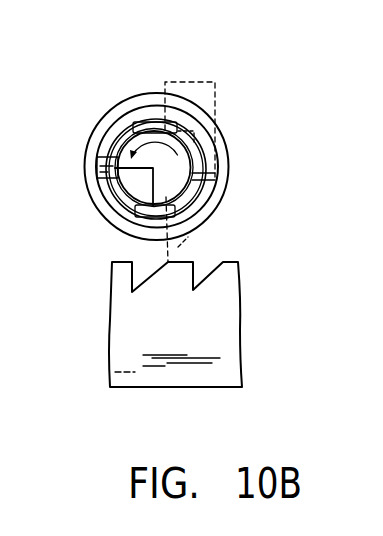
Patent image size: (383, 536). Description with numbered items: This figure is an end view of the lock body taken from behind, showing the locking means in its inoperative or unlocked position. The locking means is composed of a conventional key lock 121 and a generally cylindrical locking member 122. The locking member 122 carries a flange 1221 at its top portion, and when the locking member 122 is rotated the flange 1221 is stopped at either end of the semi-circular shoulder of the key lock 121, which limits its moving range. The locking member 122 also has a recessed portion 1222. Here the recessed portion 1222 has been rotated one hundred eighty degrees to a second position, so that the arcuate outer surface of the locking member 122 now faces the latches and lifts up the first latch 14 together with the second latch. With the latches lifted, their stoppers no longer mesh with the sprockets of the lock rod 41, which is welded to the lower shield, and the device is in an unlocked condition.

The first latch 14 is at (190, 144).
The key lock 121 is at (220, 137).
The flange 1221 is at (110, 162).
The recessed portion 1222 is at (128, 182).
The locking member 122 is at (178, 180).
The lock rod 41 is at (228, 320).